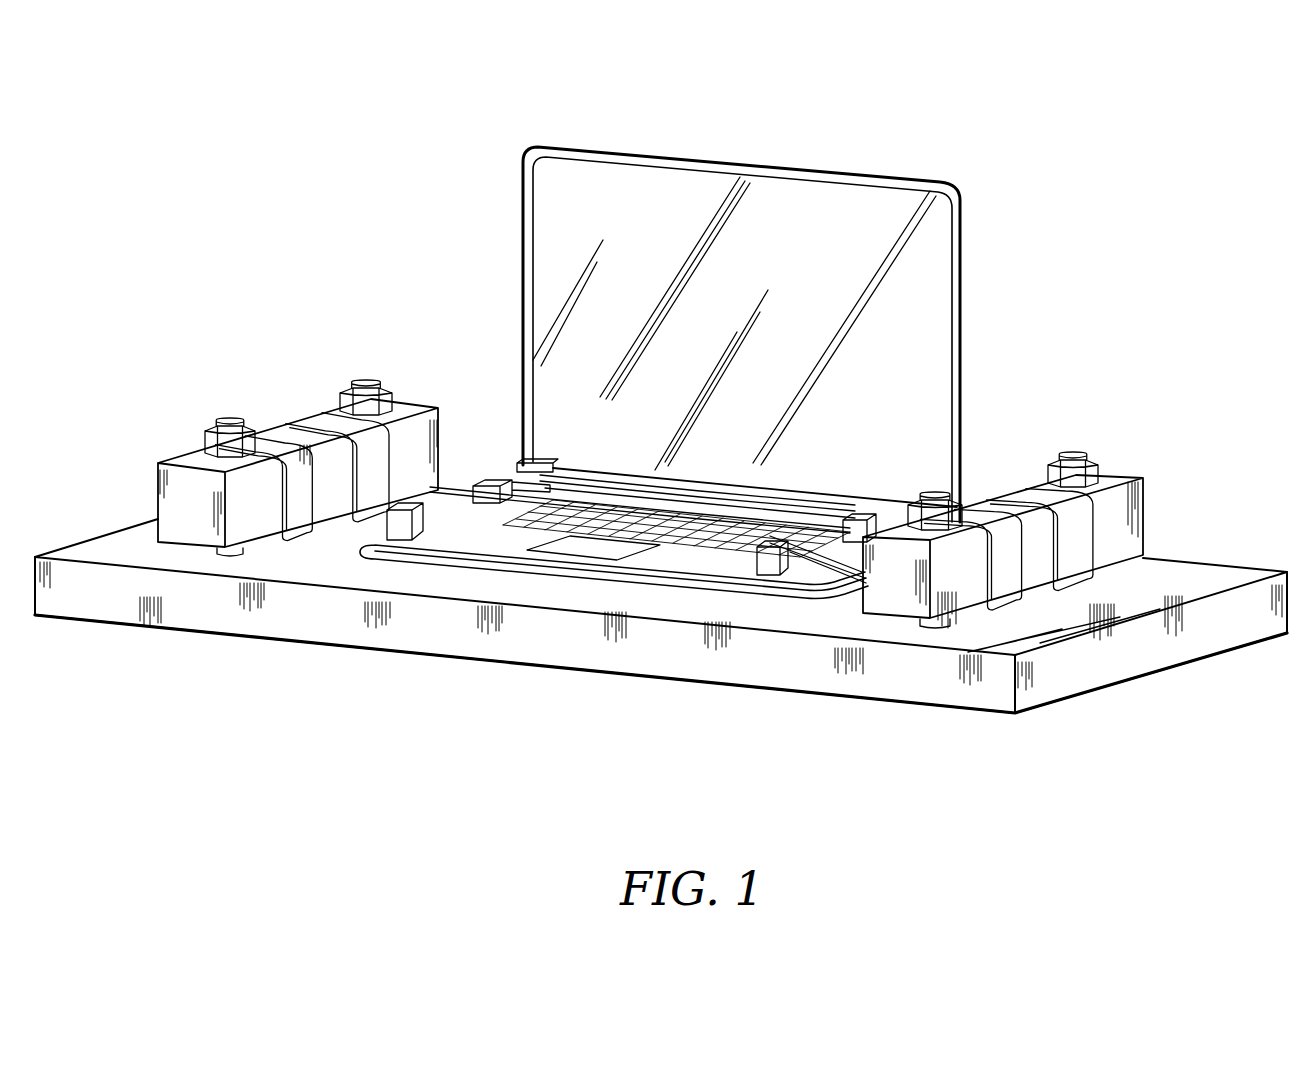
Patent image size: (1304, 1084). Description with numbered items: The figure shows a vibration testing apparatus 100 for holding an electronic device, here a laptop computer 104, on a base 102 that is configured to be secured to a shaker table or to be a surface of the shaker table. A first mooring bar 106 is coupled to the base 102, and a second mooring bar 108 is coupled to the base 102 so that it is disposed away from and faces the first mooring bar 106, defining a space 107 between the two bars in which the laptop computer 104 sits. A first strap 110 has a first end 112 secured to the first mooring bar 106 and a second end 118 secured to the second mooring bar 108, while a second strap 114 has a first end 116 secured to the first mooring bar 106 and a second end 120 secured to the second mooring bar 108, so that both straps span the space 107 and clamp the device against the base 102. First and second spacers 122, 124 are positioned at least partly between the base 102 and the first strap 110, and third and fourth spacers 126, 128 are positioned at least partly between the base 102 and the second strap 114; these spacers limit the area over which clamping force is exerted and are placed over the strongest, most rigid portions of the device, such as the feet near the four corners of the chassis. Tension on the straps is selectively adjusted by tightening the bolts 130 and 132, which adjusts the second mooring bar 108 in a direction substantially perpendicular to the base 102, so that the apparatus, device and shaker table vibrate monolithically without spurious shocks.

The vibration testing apparatus 100 is at (255, 345).
The base 102 is at (527, 665).
The laptop computer 104 is at (845, 173).
The first mooring bar 106 is at (305, 451).
The space 107 is at (614, 538).
The second mooring bar 108 is at (1014, 520).
The first strap 110 is at (470, 502).
The first end of first strap 112 is at (300, 513).
The second strap 114 is at (512, 468).
The first end of second strap 116 is at (380, 455).
The second end of first strap 118 is at (1017, 566).
The second end of second strap 120 is at (1087, 552).
The first spacer 122 is at (385, 512).
The second spacer 124 is at (770, 560).
The third spacer 126 is at (535, 458).
The fourth spacer 128 is at (848, 518).
The bolt 130 is at (958, 510).
The bolt 132 is at (1053, 465).